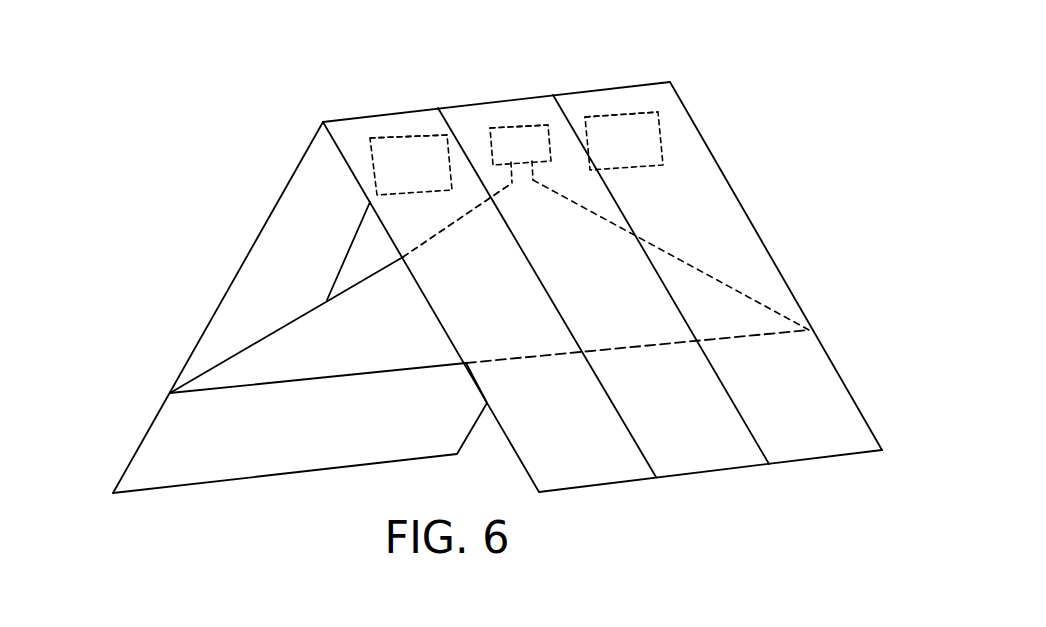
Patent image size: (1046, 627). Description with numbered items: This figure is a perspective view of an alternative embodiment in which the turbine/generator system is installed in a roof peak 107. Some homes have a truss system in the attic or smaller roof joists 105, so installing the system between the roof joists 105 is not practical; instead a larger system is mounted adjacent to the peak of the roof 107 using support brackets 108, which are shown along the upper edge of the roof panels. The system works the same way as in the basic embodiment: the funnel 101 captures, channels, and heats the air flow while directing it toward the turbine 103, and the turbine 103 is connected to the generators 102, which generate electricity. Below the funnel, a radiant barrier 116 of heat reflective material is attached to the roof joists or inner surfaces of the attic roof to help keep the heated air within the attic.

The funnel 101 is at (343, 347).
The generators 102 is at (380, 148).
The turbine 103 is at (500, 140).
The roof joists 105 is at (147, 434).
The roof peak 107 is at (670, 82).
The support brackets 108 is at (415, 128).
The radiant barrier 116 is at (282, 439).